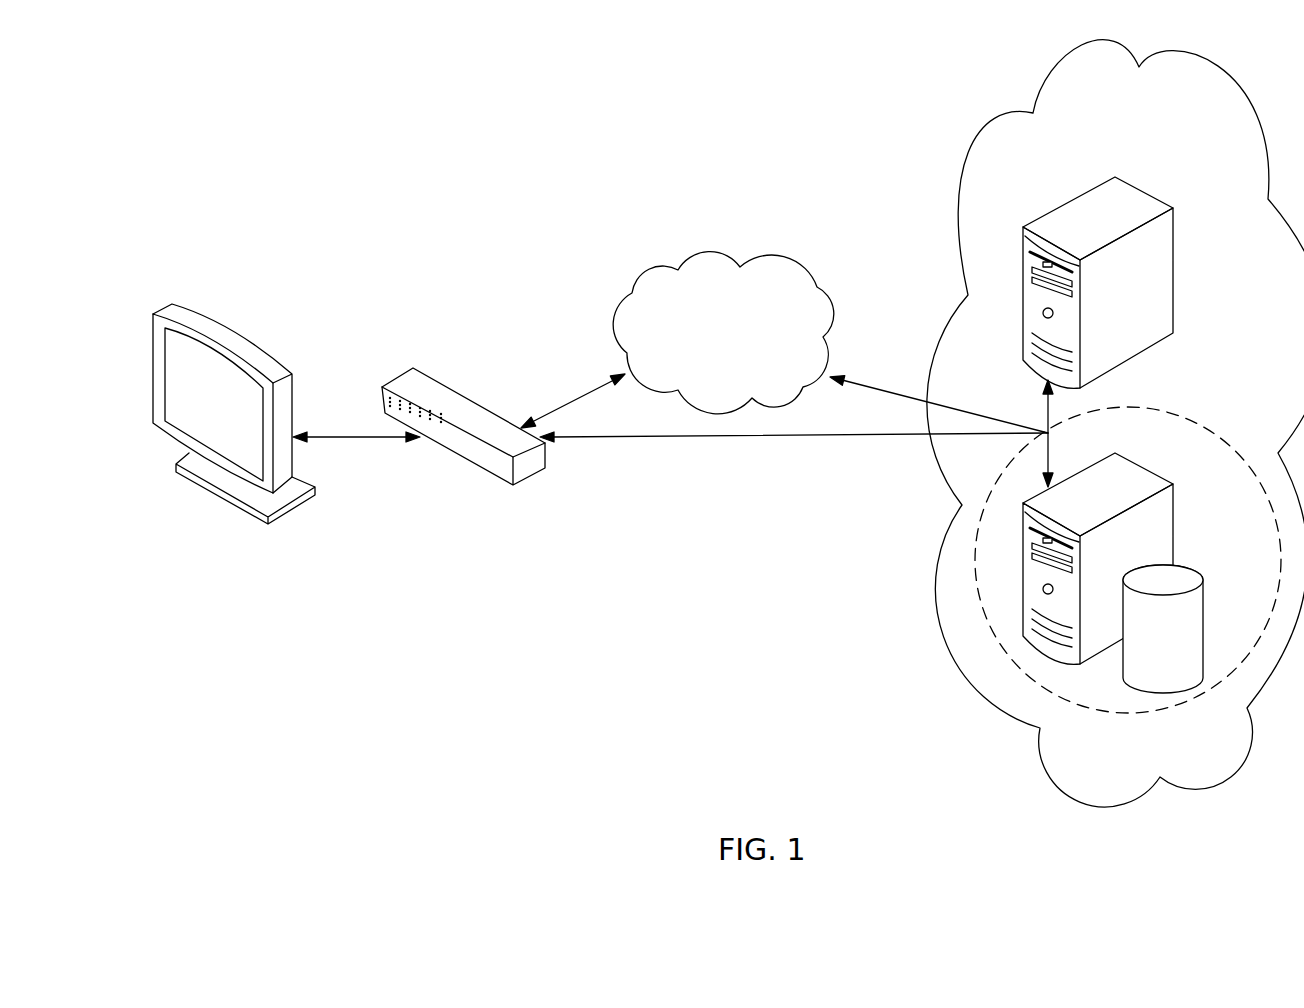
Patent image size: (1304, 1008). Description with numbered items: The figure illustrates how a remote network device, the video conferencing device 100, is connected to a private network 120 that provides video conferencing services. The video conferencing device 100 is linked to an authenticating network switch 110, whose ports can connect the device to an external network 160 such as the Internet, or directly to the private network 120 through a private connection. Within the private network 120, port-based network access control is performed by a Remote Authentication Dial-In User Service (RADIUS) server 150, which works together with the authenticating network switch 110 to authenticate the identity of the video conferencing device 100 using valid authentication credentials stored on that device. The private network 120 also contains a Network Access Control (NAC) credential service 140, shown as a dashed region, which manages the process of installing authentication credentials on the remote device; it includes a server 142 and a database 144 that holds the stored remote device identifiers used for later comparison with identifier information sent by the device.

The video conferencing device 100 is at (224, 326).
The authenticating network switch 110 is at (472, 400).
The private network 120 is at (995, 128).
The Network Access Control credential service 140 is at (1153, 405).
The server 142 is at (1150, 468).
The database 144 is at (1188, 563).
The Remote Authentication Dial-In User Service server 150 is at (1083, 193).
The external network 160 is at (715, 257).